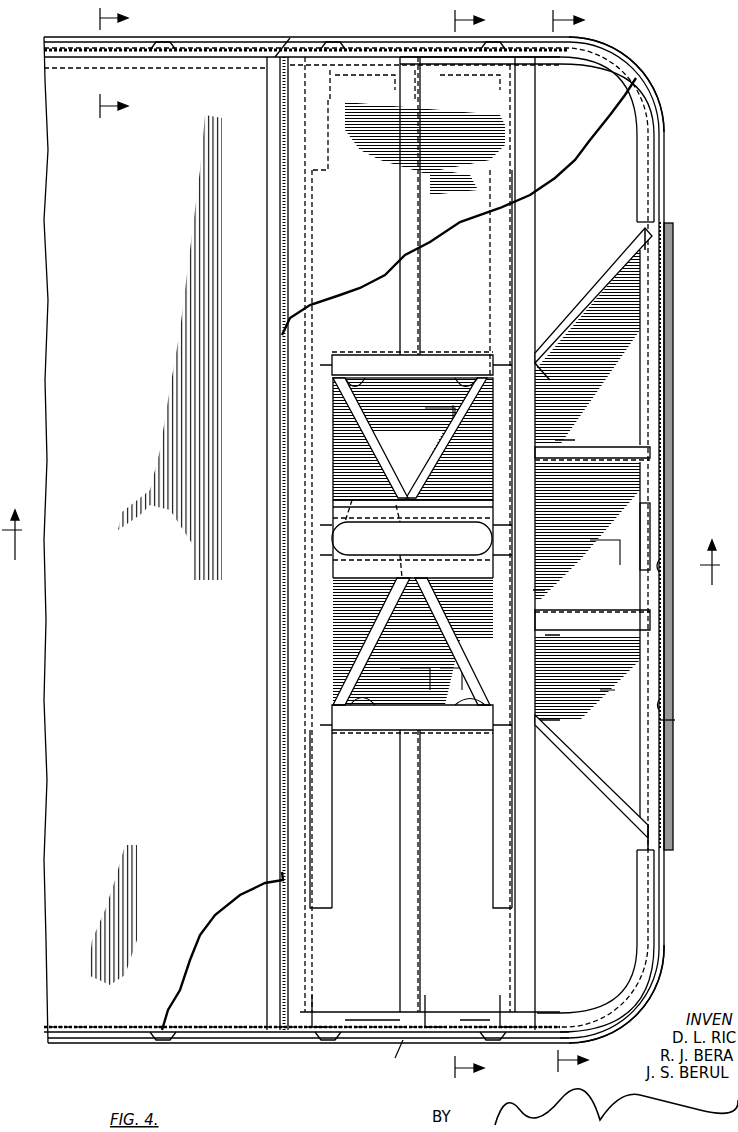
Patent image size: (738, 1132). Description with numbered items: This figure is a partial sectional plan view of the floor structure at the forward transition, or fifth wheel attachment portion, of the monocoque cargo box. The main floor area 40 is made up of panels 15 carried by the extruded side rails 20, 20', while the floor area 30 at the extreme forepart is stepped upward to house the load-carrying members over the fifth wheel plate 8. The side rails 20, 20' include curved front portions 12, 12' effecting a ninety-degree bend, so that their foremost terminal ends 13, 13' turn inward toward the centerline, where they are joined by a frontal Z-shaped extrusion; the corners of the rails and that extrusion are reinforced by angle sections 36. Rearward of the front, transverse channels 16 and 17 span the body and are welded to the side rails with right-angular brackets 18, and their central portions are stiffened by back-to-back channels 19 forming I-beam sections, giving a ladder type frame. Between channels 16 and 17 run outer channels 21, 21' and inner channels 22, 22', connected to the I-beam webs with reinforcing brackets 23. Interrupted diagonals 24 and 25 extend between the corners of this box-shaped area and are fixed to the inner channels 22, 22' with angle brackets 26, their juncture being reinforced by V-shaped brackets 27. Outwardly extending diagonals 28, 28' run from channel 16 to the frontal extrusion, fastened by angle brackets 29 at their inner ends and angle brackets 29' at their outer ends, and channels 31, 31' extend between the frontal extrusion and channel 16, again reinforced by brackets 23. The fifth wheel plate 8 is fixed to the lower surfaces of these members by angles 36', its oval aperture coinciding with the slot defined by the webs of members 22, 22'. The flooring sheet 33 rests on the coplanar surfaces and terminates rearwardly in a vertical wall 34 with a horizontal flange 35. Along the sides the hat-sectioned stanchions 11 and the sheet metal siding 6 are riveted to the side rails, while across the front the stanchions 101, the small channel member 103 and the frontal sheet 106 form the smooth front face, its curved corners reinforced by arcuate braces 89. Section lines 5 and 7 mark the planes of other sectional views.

The section line 5- 5 is at (363, 547).
The sheet metal siding 6 is at (431, 546).
The section line 7- 7 is at (462, 546).
The fifth wheel plate 8 is at (706, 718).
The hat-sectioned stanchion 11 is at (160, 40).
The curved front portion 12 is at (616, 994).
The curved front portion 12' is at (619, 84).
The terminal end of side rail 13 is at (621, 846).
The terminal end of side rail 13' is at (622, 233).
The floor panel 15 is at (45, 660).
The transverse channel 16 is at (536, 938).
The transverse channel 17 is at (312, 960).
The right angular reinforcing bracket 18 is at (312, 78).
The reinforcing channel 19 is at (328, 782).
The side rail 20 is at (354, 525).
The side rail 20' is at (346, 570).
The outer channel 21 is at (412, 736).
The outer channel 21' is at (412, 345).
The inner channel 22 is at (412, 539).
The inner channel 22' is at (413, 480).
The right-angular reinforcing bracket 23 is at (318, 362).
The interrupted diagonal 24 is at (470, 447).
The interrupted diagonal 25 is at (372, 468).
The angle bracket 26 is at (360, 378).
The V-shaped bracket 27 is at (400, 528).
The outwardly extending diagonal 28 is at (591, 736).
The outwardly extending diagonal 28' is at (593, 336).
The angle bracket 29 is at (594, 778).
The angle bracket 29' is at (623, 529).
The floor area 30 is at (425, 538).
The forward and rearwardly extending channel 31 is at (592, 546).
The forward and rearwardly extending channel 31' is at (592, 441).
The flooring sheet 33 is at (366, 275).
The vertical wall 34 is at (285, 945).
The horizontal flange 35 is at (270, 965).
The angle section 36 is at (548, 548).
The angle 36' is at (675, 540).
The floor area 40 is at (155, 526).
The arcuate brace 89 is at (637, 132).
The front stanchion 101 is at (661, 210).
The channel member 103 is at (656, 478).
The frontal sheet 106 is at (580, 1040).